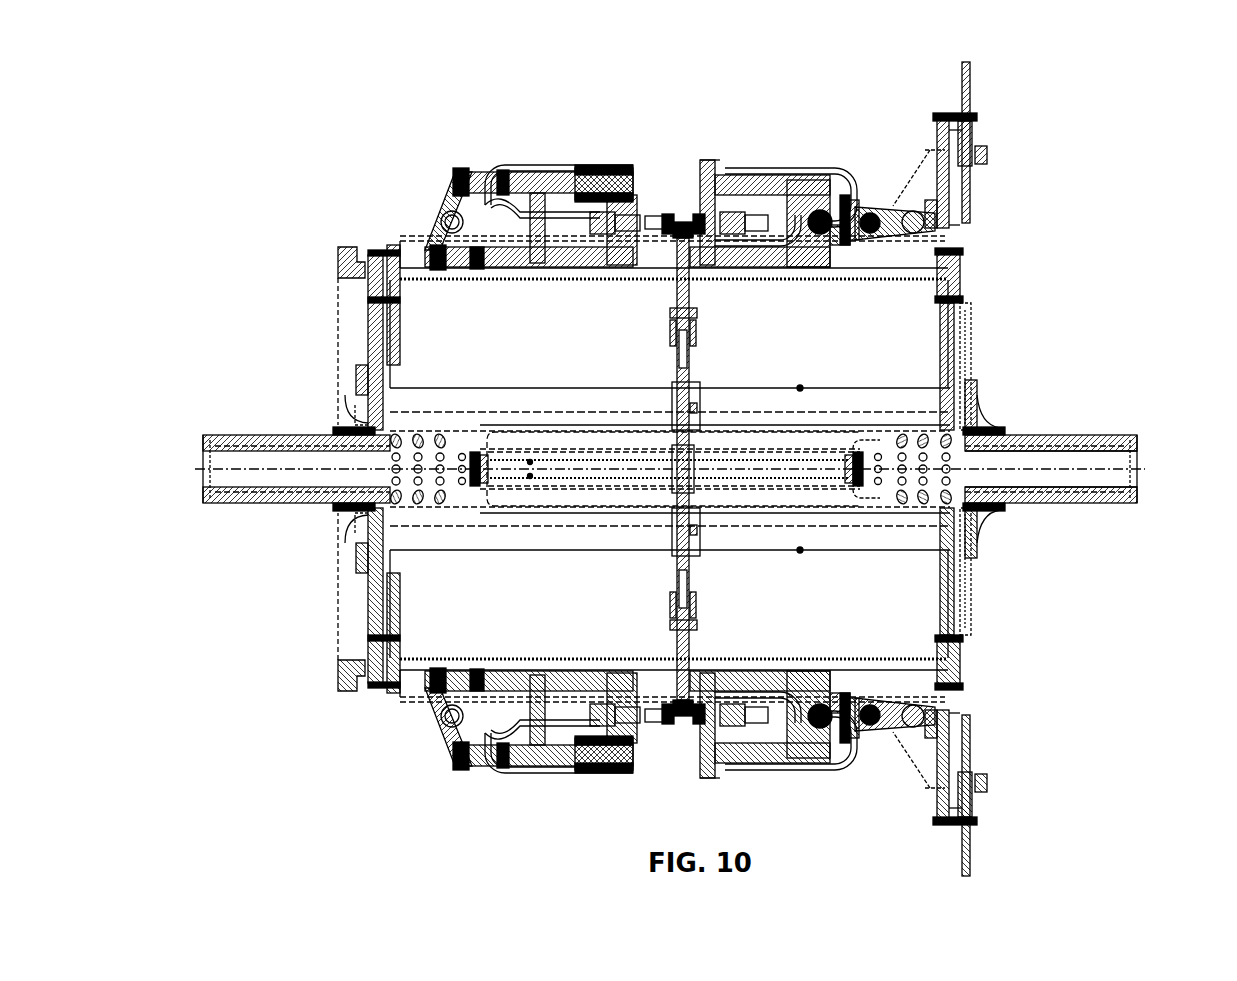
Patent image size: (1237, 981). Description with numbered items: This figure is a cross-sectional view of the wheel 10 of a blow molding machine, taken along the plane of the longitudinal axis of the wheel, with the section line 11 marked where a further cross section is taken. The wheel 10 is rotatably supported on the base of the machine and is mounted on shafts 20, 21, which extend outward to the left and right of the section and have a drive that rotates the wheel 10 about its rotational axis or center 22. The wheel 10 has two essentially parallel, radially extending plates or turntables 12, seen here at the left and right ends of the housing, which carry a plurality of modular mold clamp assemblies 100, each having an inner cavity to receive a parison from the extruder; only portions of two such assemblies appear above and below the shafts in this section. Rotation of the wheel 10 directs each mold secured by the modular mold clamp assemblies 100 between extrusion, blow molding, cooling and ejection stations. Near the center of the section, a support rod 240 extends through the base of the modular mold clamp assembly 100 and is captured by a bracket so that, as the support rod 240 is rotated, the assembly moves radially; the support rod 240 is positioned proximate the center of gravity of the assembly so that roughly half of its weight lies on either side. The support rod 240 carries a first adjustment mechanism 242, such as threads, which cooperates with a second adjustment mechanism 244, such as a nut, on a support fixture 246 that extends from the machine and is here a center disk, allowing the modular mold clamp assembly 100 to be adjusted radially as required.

The wheel 10 is at (288, 162).
The section line 11- 11 is at (637, 160).
The plates or turntables 12 is at (365, 333).
The shaft 20 is at (1140, 447).
The shaft 21 is at (205, 440).
The rotational axis or center 22 is at (1085, 468).
The modular mold clamp assembly 100 is at (762, 165).
The support rod 240 is at (672, 293).
The first adjustment mechanism 242 is at (697, 312).
The second adjustment mechanism 244 is at (694, 320).
The support fixture 246 is at (673, 360).